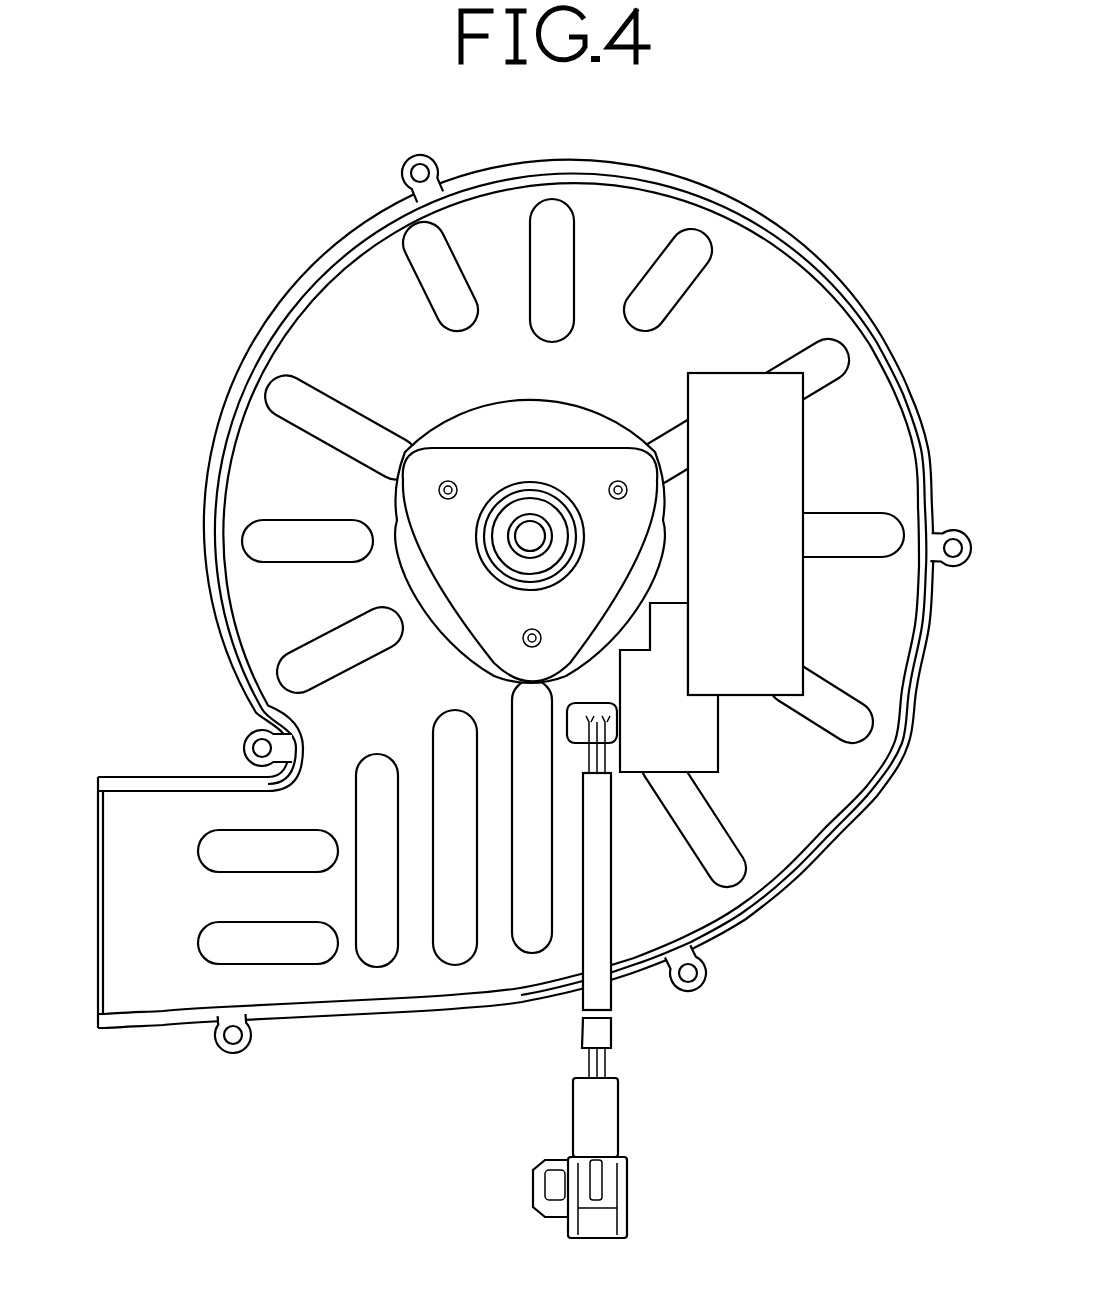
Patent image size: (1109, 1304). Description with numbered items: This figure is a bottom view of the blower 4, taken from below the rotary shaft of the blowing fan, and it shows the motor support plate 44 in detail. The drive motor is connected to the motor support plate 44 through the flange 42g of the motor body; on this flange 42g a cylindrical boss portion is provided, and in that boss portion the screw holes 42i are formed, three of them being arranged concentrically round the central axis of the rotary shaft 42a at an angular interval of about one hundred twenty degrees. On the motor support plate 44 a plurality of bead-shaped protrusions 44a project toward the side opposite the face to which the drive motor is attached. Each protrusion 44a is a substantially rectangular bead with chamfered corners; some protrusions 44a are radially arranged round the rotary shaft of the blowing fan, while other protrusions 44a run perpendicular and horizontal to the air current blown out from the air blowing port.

The blower 4 is at (520, 669).
The motor support plate 44 is at (520, 604).
The protrusion 44a is at (300, 667).
The rotary shaft 42a is at (530, 537).
The screw hole 42i is at (450, 481).
The flange 42g is at (430, 470).